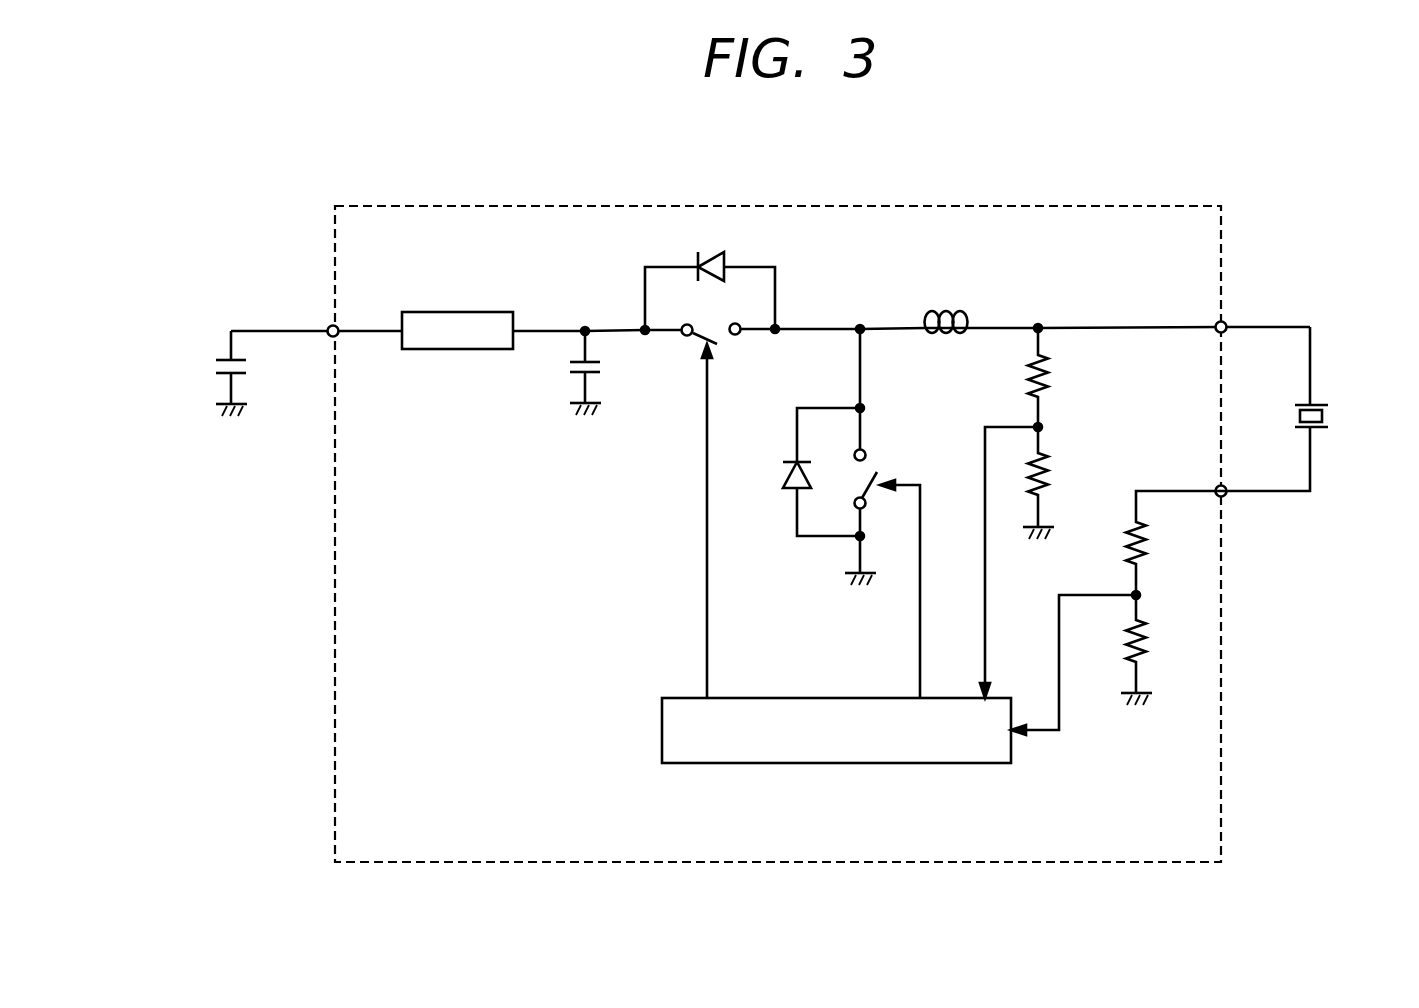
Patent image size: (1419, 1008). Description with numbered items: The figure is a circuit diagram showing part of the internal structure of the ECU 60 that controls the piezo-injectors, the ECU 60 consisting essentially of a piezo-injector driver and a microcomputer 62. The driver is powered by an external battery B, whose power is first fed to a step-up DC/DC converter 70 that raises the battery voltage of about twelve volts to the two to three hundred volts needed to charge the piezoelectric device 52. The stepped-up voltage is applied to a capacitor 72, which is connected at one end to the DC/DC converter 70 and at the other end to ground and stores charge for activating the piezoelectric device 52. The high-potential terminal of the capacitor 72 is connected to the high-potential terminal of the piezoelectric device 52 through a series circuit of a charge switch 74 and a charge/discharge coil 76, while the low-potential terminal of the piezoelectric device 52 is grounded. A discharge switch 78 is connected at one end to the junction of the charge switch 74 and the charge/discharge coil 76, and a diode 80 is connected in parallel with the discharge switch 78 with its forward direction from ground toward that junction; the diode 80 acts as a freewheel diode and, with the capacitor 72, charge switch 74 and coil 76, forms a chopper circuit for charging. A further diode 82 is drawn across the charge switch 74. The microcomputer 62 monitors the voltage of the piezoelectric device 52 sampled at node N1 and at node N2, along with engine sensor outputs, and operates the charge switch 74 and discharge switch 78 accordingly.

The battery B is at (226, 360).
The ECU 60 is at (1222, 697).
The DC/DC converter 70 is at (490, 312).
The capacitor 72 is at (575, 360).
The charge switch 74 is at (699, 337).
The charge/discharge coil 76 is at (967, 315).
The discharge switch 78 is at (872, 493).
The diode 80 is at (783, 475).
The diode 82 is at (723, 255).
The node N1 is at (1046, 426).
The node N2 is at (1144, 595).
The piezoelectric device 52 is at (1323, 402).
The microcomputer 62 is at (1014, 752).